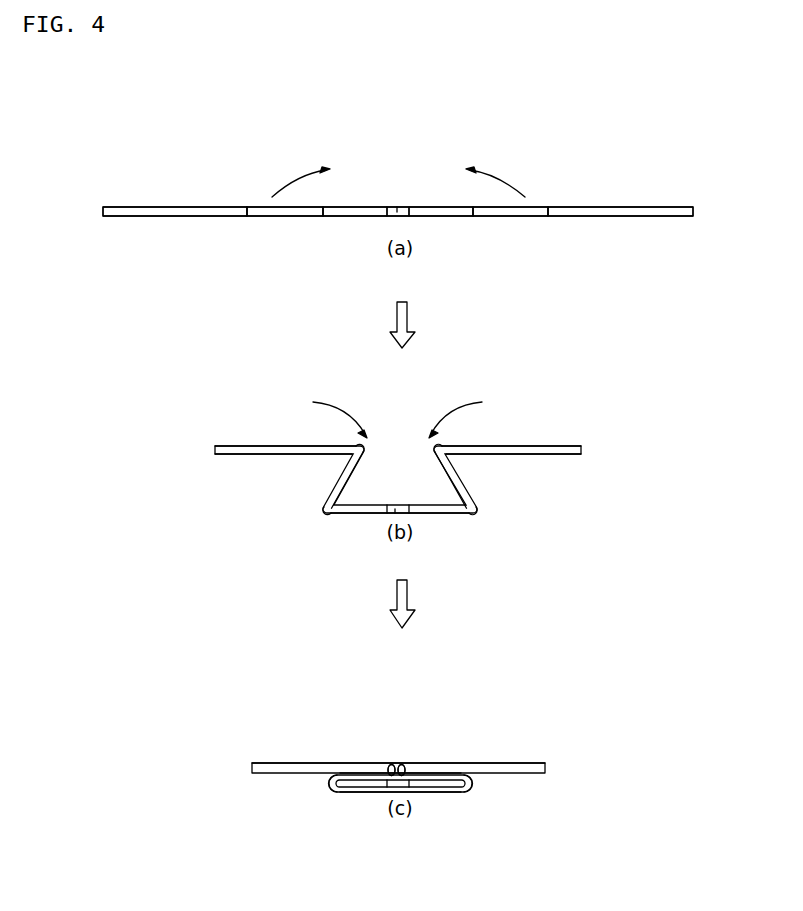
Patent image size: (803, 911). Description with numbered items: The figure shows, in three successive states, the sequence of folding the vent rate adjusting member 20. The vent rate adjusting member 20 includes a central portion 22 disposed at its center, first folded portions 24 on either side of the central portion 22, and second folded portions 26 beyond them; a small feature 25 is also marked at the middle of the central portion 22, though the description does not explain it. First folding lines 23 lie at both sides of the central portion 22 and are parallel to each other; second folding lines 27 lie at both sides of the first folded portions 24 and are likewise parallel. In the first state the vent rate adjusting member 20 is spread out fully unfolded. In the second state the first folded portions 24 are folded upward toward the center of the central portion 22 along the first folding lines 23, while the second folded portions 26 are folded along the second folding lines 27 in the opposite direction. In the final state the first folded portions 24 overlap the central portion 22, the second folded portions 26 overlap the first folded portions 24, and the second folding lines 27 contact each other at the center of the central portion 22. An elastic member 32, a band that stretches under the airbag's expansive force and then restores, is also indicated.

The vent rate adjusting member 20 is at (119, 192).
The central portion 22 is at (353, 217).
The first folding line 23 is at (323, 217).
The first folded portion 24 is at (517, 217).
The center slit 25 is at (397, 217).
The second folded portion 26 is at (202, 217).
The second folding line 27 is at (247, 217).
The elastic member 32 is at (393, 513).